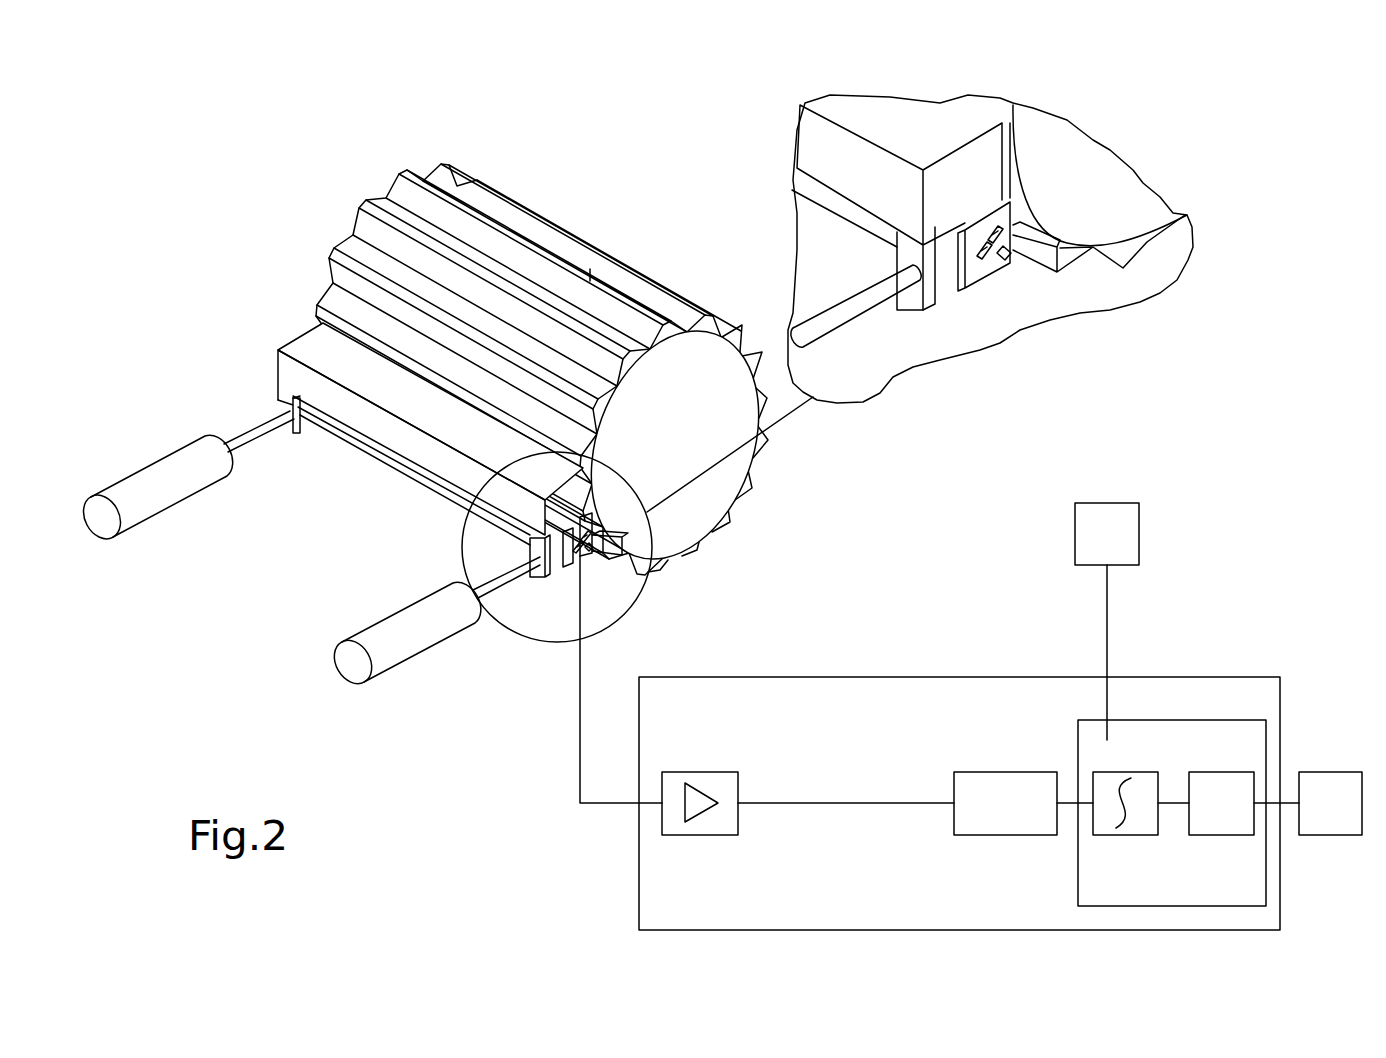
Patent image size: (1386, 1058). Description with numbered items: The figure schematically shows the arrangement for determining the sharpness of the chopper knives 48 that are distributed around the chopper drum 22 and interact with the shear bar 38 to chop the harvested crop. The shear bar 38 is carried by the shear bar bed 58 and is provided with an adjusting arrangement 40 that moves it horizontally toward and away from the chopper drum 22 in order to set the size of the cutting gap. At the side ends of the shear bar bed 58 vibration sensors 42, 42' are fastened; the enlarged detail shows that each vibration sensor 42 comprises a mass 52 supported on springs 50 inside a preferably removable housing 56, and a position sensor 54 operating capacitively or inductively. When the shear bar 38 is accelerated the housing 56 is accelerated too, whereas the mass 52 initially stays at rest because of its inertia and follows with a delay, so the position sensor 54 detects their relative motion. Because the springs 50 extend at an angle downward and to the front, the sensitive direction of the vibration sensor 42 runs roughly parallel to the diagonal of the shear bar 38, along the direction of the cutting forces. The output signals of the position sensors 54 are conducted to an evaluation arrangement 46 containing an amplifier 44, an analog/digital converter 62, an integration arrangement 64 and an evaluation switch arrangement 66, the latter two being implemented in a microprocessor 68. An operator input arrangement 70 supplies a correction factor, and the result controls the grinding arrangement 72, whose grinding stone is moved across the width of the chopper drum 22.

The chopper drum 22 is at (400, 208).
The shear bar 38 is at (308, 340).
The adjusting arrangement 40 is at (93, 497).
The vibration sensor 42 is at (823, 427).
The vibration sensor 42' is at (317, 450).
The amplifier 44 is at (708, 835).
The evaluation arrangement 46 is at (744, 730).
The chopper knives 48 is at (705, 316).
The springs 50 is at (592, 540).
The mass 52 is at (590, 511).
The position sensor 54 is at (590, 553).
The housing 56 is at (572, 555).
The shear bar bed 58 is at (400, 467).
The analog/digital converter 62 is at (1043, 835).
The integration arrangement 64 is at (1114, 835).
The evaluation switch arrangement 66 is at (1218, 835).
The microprocessor 68 is at (1166, 740).
The operator input arrangement 70 is at (1107, 621).
The grinding arrangement 72 is at (1330, 803).